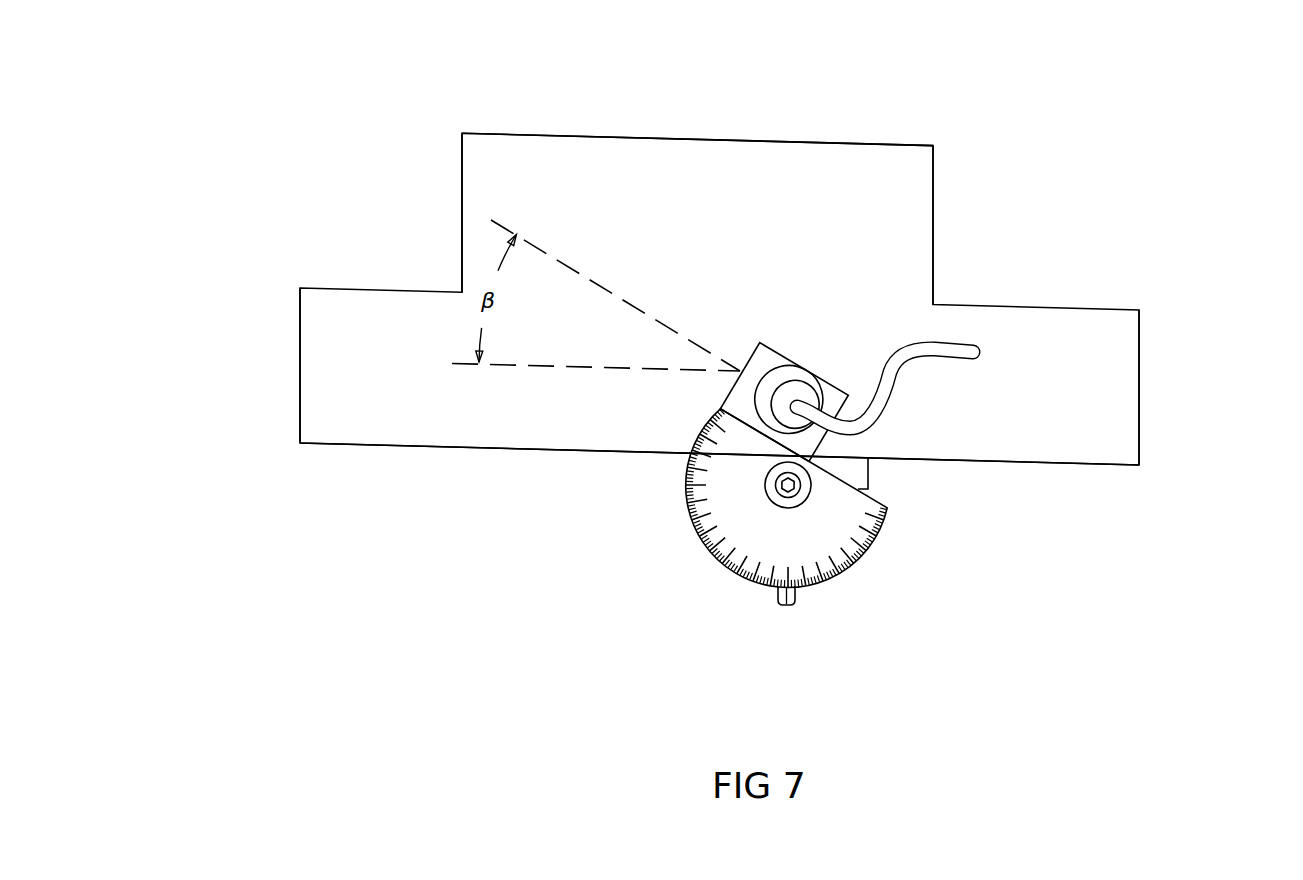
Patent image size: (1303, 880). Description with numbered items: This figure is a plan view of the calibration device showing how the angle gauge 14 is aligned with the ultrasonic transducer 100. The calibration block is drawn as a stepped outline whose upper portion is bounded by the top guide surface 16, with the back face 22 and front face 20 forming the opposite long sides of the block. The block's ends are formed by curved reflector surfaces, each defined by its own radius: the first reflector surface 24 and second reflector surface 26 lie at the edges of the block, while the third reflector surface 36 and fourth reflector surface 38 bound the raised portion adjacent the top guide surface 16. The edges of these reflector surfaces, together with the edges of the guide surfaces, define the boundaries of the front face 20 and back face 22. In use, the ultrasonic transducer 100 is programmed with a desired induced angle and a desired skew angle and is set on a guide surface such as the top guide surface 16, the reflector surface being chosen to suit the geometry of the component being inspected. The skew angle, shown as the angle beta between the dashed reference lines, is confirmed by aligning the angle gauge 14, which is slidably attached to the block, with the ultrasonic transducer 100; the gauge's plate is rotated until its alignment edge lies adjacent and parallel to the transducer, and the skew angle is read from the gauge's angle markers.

The angle gauge 14 is at (863, 590).
The top guide surface 16 is at (742, 172).
The front face 20 is at (518, 450).
The back face 22 is at (592, 136).
The first reflector surface 24 is at (1140, 387).
The second reflector surface 26 is at (297, 352).
The third reflector surface 36 is at (460, 222).
The fourth reflector surface 38 is at (935, 223).
The ultrasonic transducer 100 is at (783, 350).